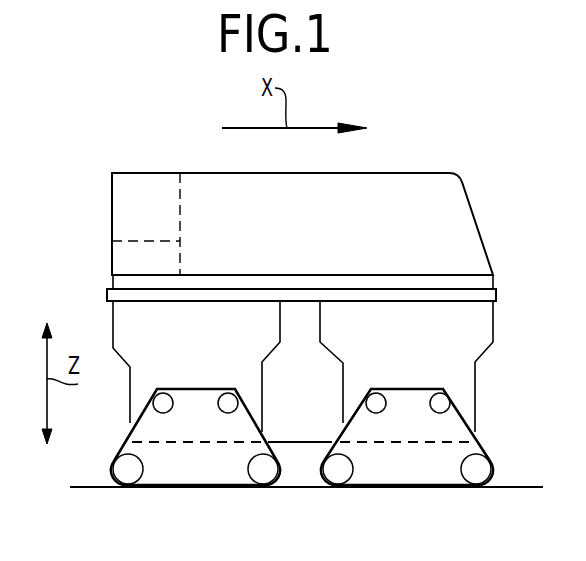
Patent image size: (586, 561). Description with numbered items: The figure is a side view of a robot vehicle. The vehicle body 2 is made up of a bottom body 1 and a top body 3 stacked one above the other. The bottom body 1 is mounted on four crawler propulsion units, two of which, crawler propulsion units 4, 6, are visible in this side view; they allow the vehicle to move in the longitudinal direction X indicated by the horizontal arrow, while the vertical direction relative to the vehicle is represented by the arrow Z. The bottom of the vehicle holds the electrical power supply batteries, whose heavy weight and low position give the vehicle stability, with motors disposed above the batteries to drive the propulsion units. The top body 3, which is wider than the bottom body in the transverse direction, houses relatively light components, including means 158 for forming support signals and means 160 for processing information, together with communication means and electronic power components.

The bottom body 1 is at (451, 325).
The vehicle body 2 is at (102, 326).
The top body 3 is at (423, 190).
The crawler propulsion unit 4 is at (424, 465).
The crawler propulsion unit 6 is at (210, 465).
The means for forming support signals 158 is at (134, 259).
The means for processing information 160 is at (134, 190).